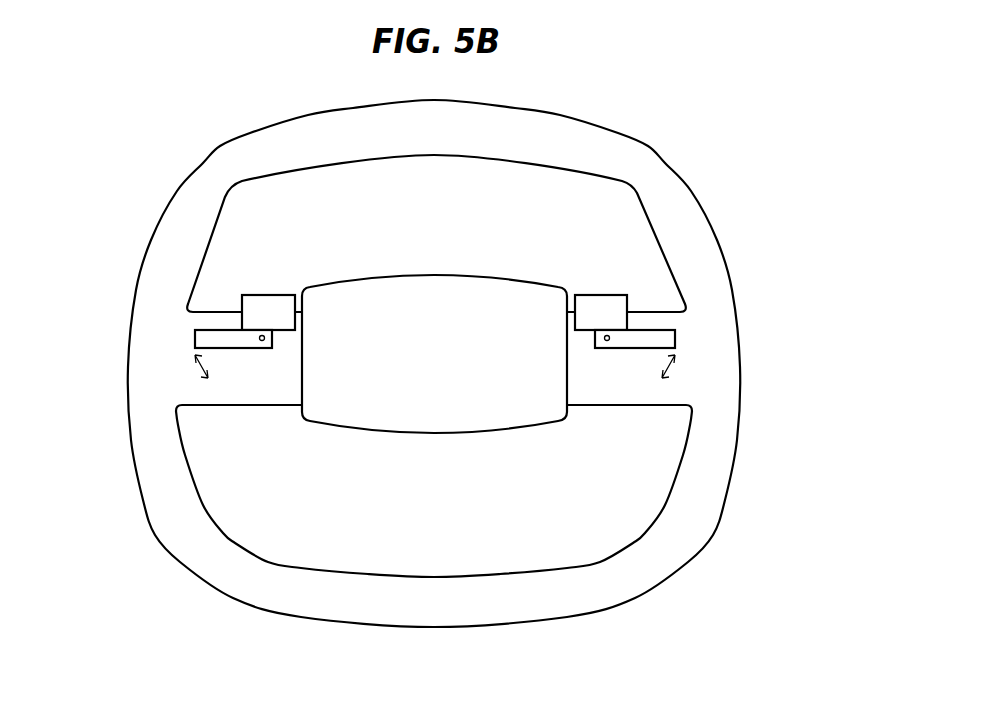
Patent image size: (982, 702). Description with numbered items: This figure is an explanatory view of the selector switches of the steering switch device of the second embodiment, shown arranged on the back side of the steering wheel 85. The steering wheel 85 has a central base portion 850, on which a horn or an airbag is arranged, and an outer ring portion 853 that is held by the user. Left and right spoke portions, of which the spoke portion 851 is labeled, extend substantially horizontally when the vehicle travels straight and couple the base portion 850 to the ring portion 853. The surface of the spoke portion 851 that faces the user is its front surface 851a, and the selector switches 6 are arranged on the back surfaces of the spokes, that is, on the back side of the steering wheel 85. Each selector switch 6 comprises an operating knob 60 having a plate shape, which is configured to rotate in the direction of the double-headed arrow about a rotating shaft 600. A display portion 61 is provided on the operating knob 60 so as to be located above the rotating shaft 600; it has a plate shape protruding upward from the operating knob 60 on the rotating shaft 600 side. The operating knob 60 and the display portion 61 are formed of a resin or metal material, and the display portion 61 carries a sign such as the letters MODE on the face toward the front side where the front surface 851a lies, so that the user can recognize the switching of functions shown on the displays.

The steering wheel 85 is at (710, 127).
The ring portion 853 is at (662, 182).
The base portion 850 is at (458, 297).
The spoke portion 851 is at (205, 407).
The front surface of the spoke portion 851a is at (235, 390).
The selector switch 6 is at (435, 278).
The operating knob 60 is at (222, 338).
The display portion 61 is at (268, 303).
The rotating shaft 600 is at (263, 341).